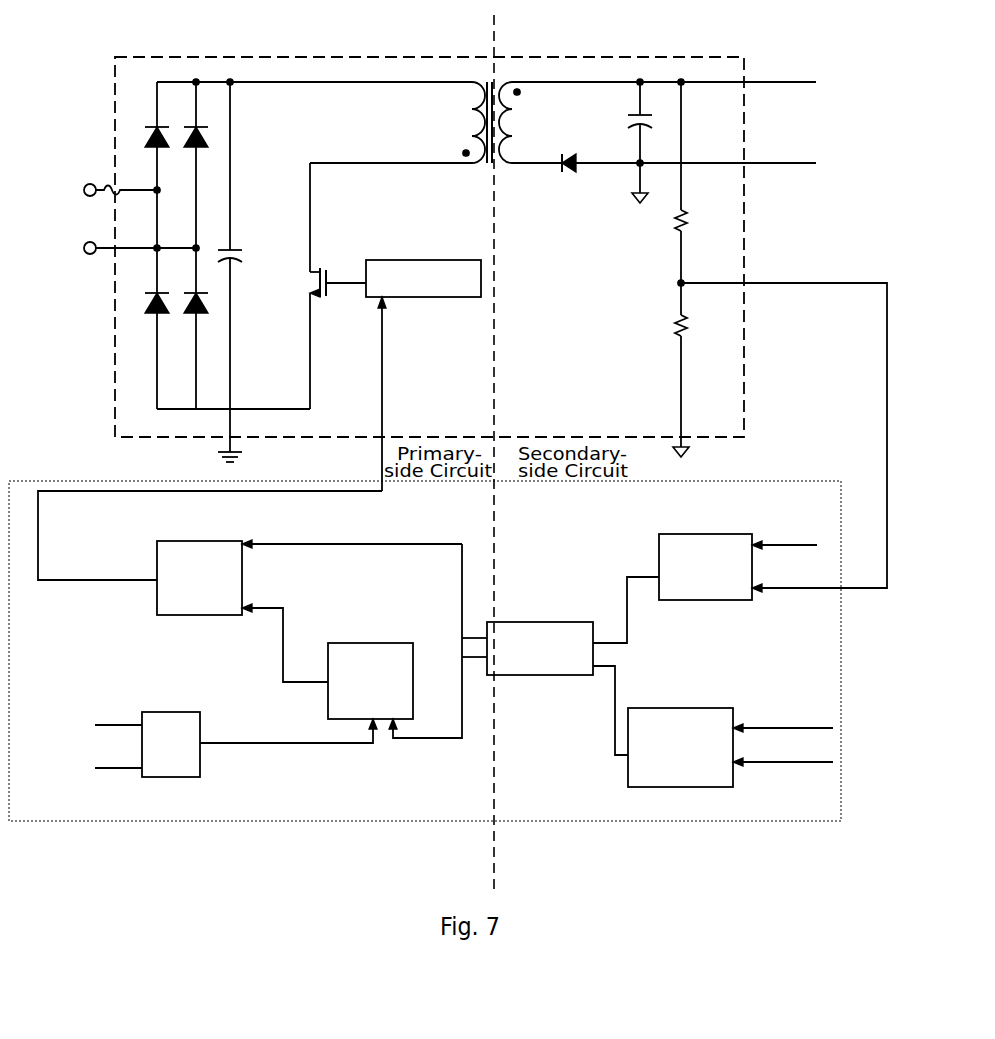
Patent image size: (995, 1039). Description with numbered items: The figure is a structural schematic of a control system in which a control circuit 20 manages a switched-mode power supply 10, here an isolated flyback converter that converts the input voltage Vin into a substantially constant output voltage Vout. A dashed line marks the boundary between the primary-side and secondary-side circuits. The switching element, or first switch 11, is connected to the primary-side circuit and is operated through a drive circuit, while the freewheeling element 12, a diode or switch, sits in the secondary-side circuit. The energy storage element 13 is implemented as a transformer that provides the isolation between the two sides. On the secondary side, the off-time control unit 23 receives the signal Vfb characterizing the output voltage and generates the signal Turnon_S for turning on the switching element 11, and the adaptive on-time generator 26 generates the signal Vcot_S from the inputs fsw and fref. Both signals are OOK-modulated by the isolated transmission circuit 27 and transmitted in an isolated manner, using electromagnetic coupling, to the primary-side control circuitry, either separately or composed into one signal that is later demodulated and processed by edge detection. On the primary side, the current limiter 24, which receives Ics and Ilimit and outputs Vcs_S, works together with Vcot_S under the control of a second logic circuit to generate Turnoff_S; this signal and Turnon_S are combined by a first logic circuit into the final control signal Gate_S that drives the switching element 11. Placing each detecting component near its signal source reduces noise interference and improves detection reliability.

The switched-mode power supply 10 is at (607, 48).
The first switch 11 is at (320, 305).
The freewheeling element 12 is at (578, 170).
The energy storage element 13 is at (468, 168).
The control circuit 20 is at (425, 651).
The off-time control unit 23 is at (677, 532).
The current limiter 24 is at (178, 617).
The adaptive on-time generator 26 is at (705, 706).
The isolated transmission circuit 27 is at (505, 622).